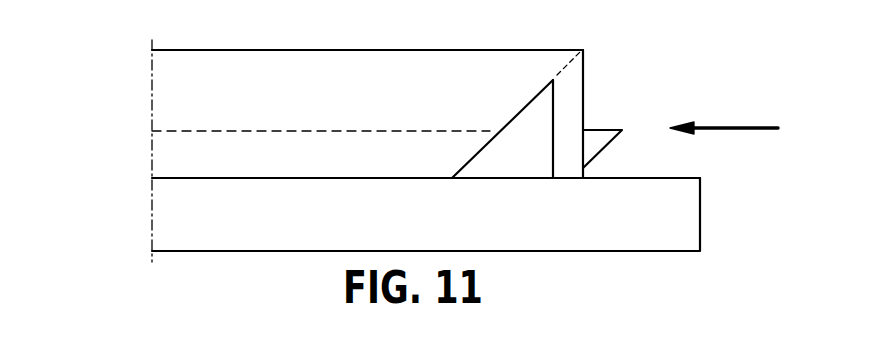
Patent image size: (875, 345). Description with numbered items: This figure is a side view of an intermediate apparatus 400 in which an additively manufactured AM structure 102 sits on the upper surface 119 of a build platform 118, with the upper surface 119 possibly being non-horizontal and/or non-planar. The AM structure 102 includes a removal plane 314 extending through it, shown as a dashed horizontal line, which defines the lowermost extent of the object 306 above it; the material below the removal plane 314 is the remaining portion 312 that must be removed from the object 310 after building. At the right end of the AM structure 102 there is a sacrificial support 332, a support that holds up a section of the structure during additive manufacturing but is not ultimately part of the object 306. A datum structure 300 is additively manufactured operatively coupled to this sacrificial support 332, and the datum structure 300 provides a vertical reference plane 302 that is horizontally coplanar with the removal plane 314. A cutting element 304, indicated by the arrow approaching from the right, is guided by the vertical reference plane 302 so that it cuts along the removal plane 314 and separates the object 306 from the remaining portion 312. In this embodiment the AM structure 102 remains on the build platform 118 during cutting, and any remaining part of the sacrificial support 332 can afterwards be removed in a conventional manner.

The AM structure 102 is at (310, 39).
The object 306 is at (424, 95).
The object 310 is at (120, 124).
The remaining portion 312 is at (363, 159).
The removal plane 314 is at (460, 131).
The sacrificial support 332 is at (570, 87).
The datum structure 300 is at (595, 142).
The vertical reference plane 302 is at (600, 130).
The cutting element 304 is at (735, 125).
The intermediate apparatus 400 is at (737, 51).
The upper surface 119 is at (670, 178).
The build platform 118 is at (670, 215).